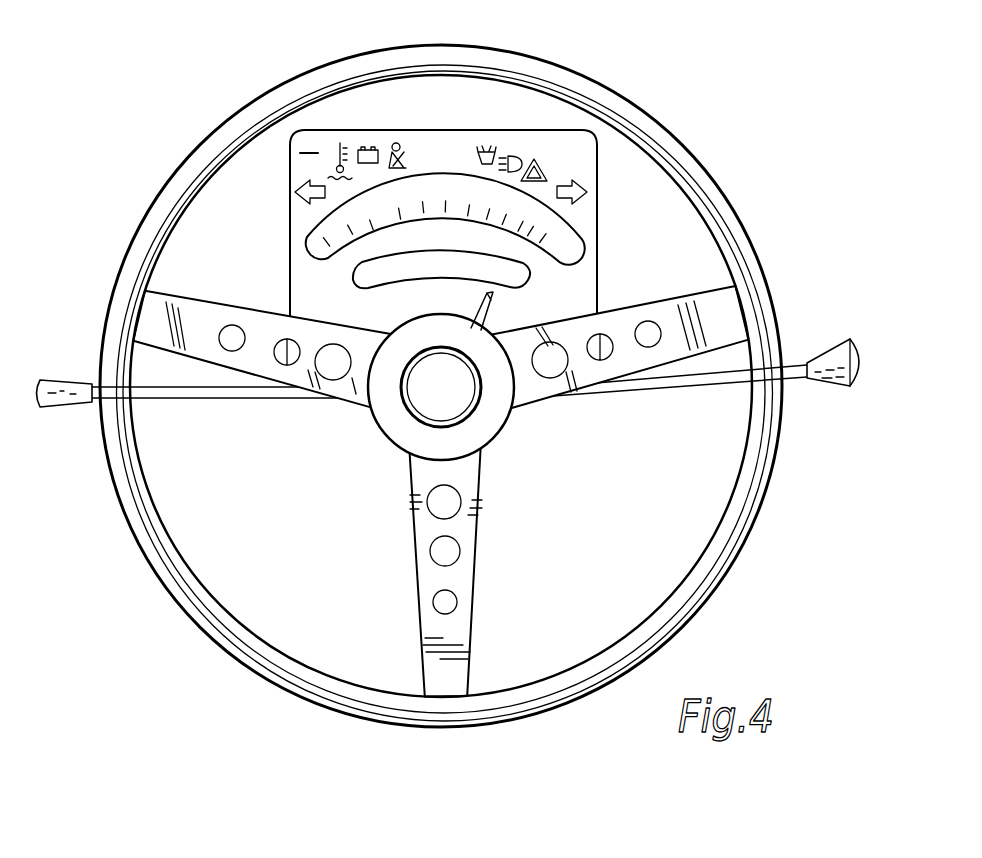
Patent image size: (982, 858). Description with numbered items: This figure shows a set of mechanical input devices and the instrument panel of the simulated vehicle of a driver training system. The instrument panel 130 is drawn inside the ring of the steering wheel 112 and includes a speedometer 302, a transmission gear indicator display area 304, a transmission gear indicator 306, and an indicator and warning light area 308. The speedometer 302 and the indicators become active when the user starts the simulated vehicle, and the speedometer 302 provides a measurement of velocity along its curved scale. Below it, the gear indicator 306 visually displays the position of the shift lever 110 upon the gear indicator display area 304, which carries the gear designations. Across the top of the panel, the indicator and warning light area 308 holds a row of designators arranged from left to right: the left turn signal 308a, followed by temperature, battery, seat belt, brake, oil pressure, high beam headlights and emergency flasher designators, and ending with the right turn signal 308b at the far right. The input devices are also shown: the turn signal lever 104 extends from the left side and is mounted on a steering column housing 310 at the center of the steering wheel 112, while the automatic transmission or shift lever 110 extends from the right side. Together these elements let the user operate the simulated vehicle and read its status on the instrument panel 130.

The instrument panel 130 is at (513, 122).
The indicator and warning light area 308 is at (324, 153).
The left turn signal 308a is at (296, 191).
The right turn signal 308b is at (588, 191).
The speedometer 302 is at (307, 245).
The transmission gear indicator display area 304 is at (357, 273).
The transmission gear indicator 306 is at (495, 311).
The steering column housing 310 is at (490, 446).
The turn signal lever 104 is at (72, 409).
The shift lever 110 is at (791, 382).
The steering wheel 112 is at (766, 497).